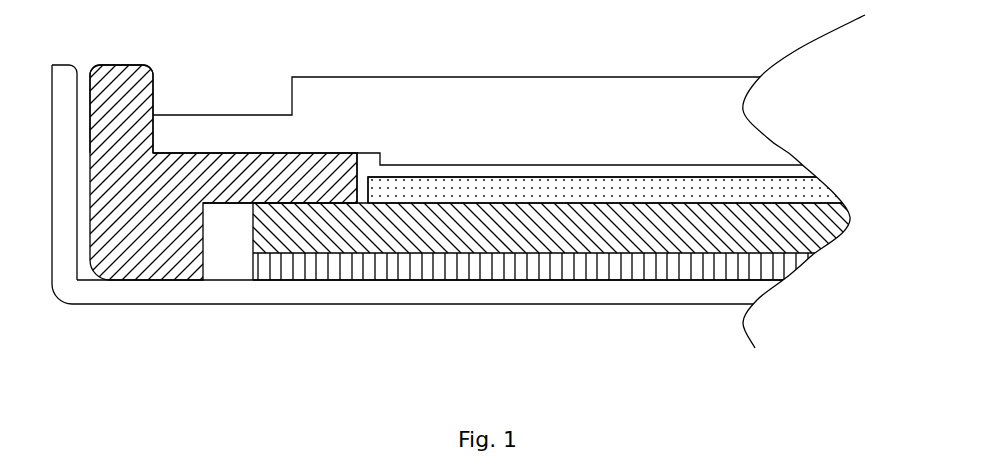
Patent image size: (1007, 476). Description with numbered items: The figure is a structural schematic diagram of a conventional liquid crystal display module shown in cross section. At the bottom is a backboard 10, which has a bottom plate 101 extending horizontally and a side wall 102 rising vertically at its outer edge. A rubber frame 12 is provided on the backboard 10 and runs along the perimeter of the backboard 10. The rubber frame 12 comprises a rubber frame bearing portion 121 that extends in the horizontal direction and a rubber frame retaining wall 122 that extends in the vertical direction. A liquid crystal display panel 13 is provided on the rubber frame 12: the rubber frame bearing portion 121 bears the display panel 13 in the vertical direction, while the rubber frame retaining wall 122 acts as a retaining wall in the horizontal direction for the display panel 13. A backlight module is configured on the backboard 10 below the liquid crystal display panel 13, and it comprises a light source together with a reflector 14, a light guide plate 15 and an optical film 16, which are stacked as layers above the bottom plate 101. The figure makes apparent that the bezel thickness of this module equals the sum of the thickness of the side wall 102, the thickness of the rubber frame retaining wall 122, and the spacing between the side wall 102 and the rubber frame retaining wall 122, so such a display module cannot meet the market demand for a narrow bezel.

The backboard 10 is at (476, 199).
The bottom plate 101 is at (620, 292).
The side wall 102 is at (62, 87).
The rubber frame 12 is at (261, 199).
The rubber frame bearing portion 121 is at (325, 180).
The rubber frame retaining wall 122 is at (143, 88).
The liquid crystal display panel 13 is at (330, 107).
The reflector 14 is at (520, 267).
The light guide plate 15 is at (450, 240).
The optical film 16 is at (627, 190).